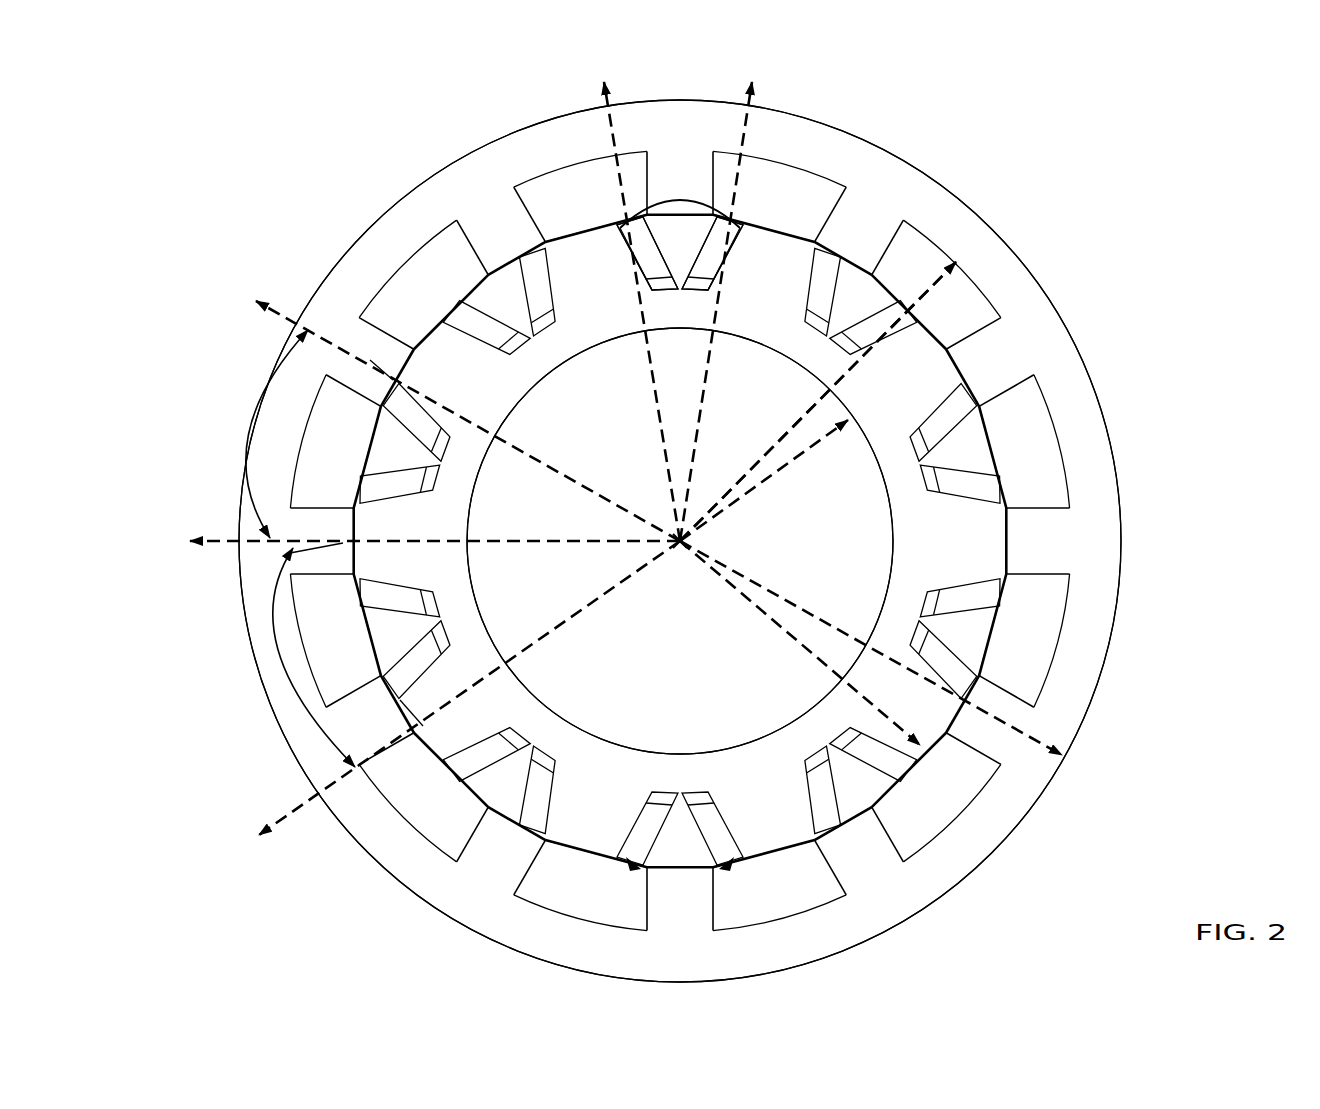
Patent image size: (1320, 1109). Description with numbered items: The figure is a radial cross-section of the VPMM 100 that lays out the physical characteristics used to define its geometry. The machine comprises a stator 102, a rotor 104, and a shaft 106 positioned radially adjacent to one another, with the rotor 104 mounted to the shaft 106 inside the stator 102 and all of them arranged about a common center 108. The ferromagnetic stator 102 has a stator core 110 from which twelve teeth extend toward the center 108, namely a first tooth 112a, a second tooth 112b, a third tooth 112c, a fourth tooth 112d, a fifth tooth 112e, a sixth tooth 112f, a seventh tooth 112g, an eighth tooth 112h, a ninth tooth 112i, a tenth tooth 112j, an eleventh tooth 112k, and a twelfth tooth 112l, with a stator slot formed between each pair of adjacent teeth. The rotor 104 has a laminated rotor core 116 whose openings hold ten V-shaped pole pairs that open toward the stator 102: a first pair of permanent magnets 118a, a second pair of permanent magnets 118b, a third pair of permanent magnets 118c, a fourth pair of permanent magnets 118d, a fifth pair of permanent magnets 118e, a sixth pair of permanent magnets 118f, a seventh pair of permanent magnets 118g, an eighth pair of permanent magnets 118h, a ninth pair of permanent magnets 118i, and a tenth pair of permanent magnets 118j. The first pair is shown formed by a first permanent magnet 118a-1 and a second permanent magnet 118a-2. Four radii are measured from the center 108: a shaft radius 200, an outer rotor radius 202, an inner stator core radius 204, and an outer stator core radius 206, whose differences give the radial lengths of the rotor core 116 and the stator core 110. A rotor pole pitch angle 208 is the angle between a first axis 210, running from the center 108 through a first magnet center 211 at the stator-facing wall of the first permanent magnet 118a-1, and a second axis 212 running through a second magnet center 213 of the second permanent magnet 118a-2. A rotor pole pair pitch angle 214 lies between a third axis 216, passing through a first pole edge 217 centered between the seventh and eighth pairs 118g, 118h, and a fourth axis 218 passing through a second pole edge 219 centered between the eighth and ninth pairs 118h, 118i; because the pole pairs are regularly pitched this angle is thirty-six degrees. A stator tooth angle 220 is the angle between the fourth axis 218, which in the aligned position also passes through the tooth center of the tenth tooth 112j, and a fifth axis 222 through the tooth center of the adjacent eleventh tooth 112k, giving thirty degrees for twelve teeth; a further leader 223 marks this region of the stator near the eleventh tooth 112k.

The VPMM 100 is at (255, 285).
The stator 102 is at (1102, 400).
The rotor 104 is at (994, 626).
The shaft 106 is at (573, 640).
The center 108 is at (678, 543).
The stator core 110 is at (972, 244).
The first tooth 112a is at (703, 180).
The second tooth 112b is at (880, 248).
The third tooth 112c is at (1007, 378).
The fourth tooth 112d is at (1063, 553).
The fifth tooth 112e is at (1003, 750).
The sixth tooth 112f is at (882, 867).
The seventh tooth 112g is at (703, 910).
The eighth tooth 112h is at (518, 867).
The ninth tooth 112i is at (381, 737).
The tenth tooth 112j is at (341, 544).
The eleventh tooth 112k is at (388, 395).
The twelfth tooth 112l is at (522, 240).
The rotor core 116 is at (614, 792).
The first pair of permanent magnets 118a is at (680, 297).
The first permanent magnet 118a-1 is at (618, 232).
The second permanent magnet 118a-2 is at (742, 232).
The second pair of permanent magnets 118b is at (818, 340).
The third pair of permanent magnets 118c is at (909, 468).
The fourth pair of permanent magnets 118d is at (916, 616).
The fifth pair of permanent magnets 118e is at (827, 744).
The sixth pair of permanent magnets 118f is at (681, 788).
The seventh pair of permanent magnets 118g is at (533, 744).
The eighth pair of permanent magnets 118h is at (440, 612).
The ninth pair of permanent magnets 118i is at (441, 464).
The tenth pair of permanent magnets 118j is at (530, 344).
The shaft radius 200 is at (750, 490).
The outer rotor radius 202 is at (800, 643).
The inner stator core radius 204 is at (852, 352).
The outer stator core radius 206 is at (792, 603).
The rotor pole pitch angle 208 is at (696, 201).
The first axis 210 is at (600, 90).
The first magnet center 211 is at (620, 228).
The second axis 212 is at (754, 88).
The second magnet center 213 is at (740, 228).
The rotor pole pair pitch angle 214 is at (280, 676).
The third axis 216 is at (309, 808).
The first pole edge 217 is at (423, 726).
The fourth axis 218 is at (203, 535).
The second pole edge 219 is at (343, 543).
The stator tooth angle 220 is at (284, 360).
The fifth axis 222 is at (268, 300).
The tooth edge 223 is at (393, 380).